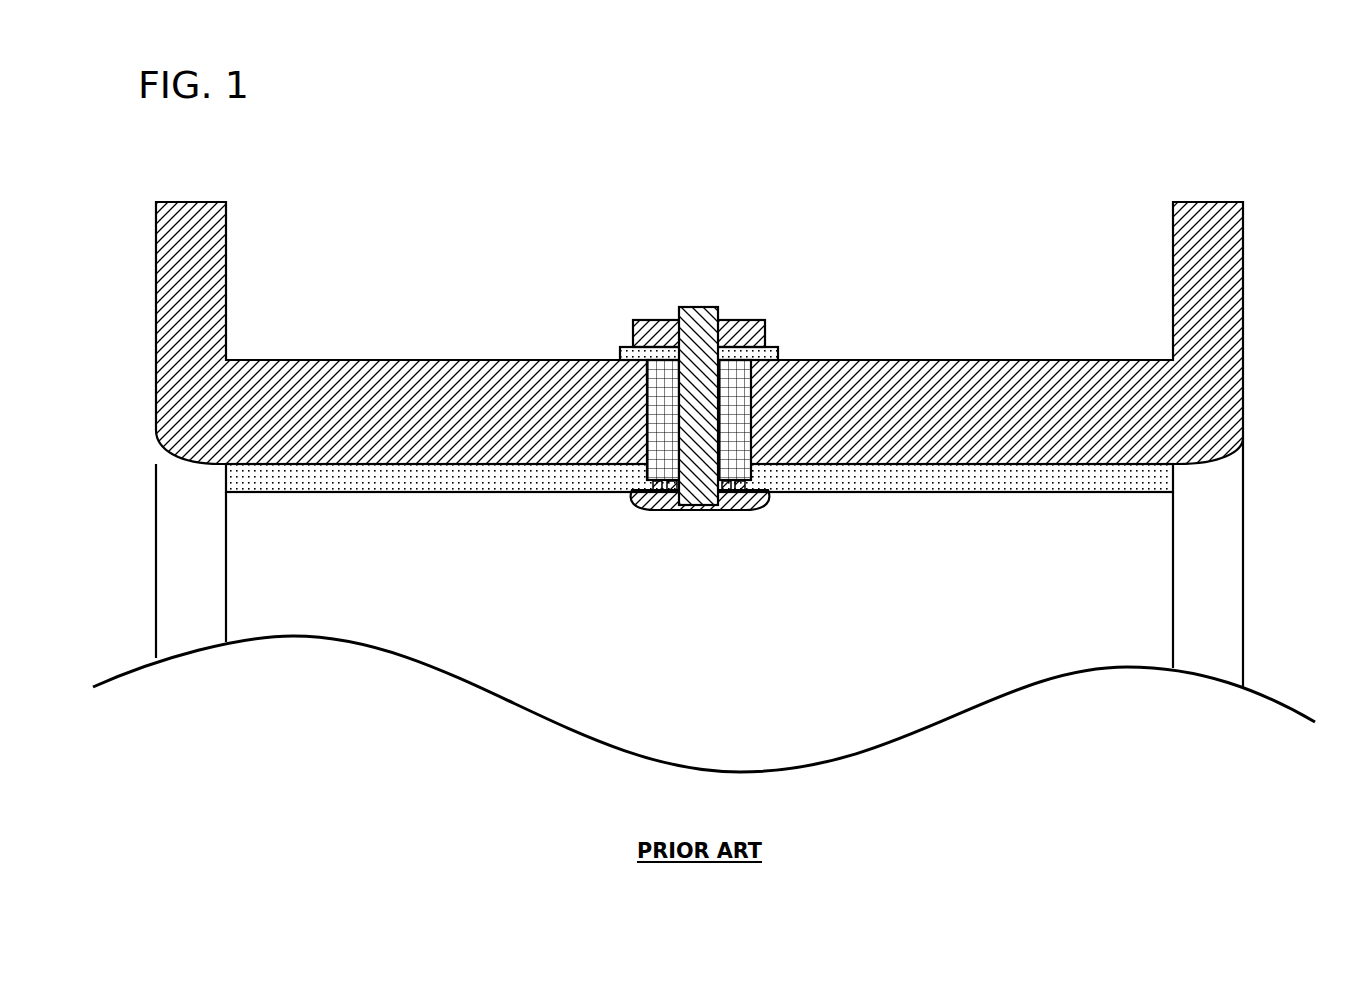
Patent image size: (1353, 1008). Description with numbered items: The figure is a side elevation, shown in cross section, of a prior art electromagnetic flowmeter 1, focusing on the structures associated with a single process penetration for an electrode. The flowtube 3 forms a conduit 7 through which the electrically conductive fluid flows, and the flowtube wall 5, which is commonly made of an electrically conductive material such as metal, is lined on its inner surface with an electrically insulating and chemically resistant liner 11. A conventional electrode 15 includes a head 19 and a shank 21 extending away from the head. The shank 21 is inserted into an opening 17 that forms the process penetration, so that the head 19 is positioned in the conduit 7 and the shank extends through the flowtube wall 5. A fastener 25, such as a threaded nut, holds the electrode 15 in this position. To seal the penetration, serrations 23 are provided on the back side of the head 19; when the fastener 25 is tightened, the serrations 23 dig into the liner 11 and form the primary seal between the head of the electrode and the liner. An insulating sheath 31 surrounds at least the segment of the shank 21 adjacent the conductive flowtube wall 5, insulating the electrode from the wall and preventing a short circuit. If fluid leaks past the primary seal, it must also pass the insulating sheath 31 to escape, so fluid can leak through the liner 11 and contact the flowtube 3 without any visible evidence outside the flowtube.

The flowmeter 1 is at (1023, 180).
The flowtube 3 is at (917, 358).
The flowtube wall 5 is at (335, 417).
The conduit 7 is at (806, 667).
The liner 11 is at (885, 492).
The electrode 15 is at (690, 307).
The opening 17 is at (742, 432).
The head 19 is at (720, 502).
The shank 21 is at (690, 360).
The serrations 23 is at (660, 487).
The fastener 25 is at (740, 330).
The insulating sheath 31 is at (650, 375).